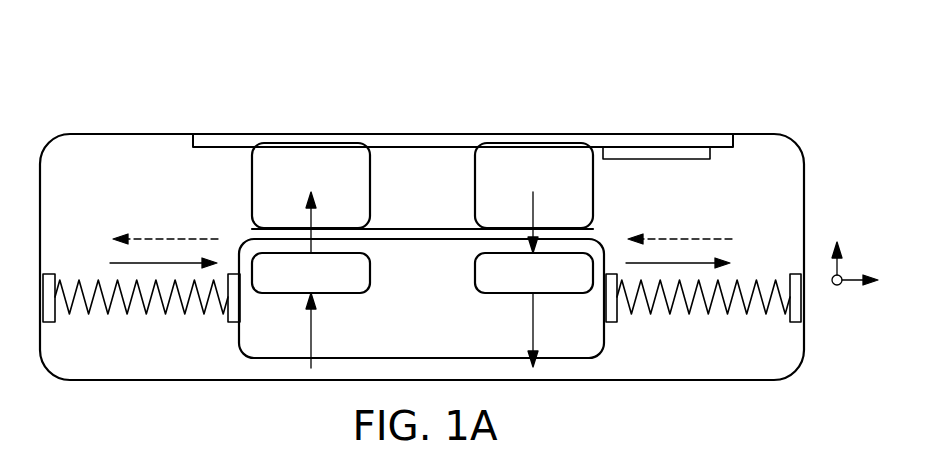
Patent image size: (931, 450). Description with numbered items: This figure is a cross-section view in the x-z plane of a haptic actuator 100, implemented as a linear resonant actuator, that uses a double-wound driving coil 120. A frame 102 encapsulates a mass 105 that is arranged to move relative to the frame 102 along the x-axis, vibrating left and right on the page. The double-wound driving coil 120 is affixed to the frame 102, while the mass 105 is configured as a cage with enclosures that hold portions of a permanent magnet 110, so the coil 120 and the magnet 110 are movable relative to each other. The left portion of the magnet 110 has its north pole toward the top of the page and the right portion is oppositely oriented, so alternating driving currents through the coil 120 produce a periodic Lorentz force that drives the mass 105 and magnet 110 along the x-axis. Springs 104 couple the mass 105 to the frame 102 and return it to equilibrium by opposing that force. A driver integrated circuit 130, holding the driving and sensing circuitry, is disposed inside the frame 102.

The haptic actuator 100 is at (248, 58).
The frame 102 is at (135, 197).
The springs 104 is at (133, 315).
The mass 105 is at (555, 358).
The permanent magnet 110 is at (293, 293).
The double-wound driving coil 120 is at (422, 147).
The driver integrated circuit 130 is at (655, 159).